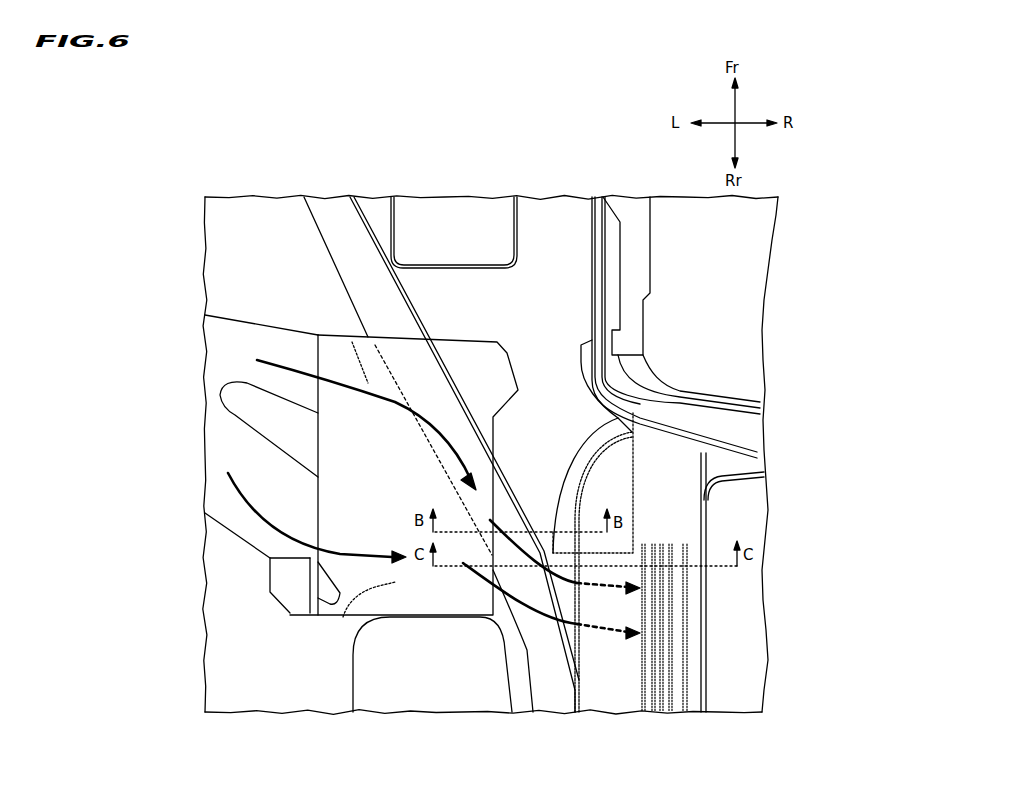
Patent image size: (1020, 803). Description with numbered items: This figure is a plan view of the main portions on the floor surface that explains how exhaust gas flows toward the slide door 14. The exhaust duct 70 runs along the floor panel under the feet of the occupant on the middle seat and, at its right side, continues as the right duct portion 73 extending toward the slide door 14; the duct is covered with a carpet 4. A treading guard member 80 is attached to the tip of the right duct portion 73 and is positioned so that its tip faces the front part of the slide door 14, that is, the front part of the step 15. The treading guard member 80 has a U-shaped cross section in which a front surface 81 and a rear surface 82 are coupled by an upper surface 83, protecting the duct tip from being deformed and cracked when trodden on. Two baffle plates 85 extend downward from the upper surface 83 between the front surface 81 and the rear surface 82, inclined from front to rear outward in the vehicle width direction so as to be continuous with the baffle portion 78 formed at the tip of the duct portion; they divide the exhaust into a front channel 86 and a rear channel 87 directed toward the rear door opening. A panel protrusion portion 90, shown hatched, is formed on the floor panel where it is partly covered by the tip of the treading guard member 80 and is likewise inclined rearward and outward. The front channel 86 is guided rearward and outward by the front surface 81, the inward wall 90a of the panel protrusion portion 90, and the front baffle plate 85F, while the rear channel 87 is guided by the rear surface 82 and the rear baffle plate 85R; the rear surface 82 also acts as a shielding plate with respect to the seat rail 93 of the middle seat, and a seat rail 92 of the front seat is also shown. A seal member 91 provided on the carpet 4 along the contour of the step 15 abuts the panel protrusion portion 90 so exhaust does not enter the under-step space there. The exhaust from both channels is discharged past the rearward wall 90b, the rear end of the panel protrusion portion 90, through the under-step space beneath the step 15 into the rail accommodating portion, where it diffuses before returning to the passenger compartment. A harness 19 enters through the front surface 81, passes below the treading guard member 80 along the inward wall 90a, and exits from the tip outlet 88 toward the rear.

The carpet 4 is at (593, 228).
The slide door 14 is at (740, 642).
The step 15 is at (613, 690).
The harness 19 is at (552, 690).
The exhaust duct 70 is at (243, 320).
The right duct portion 73 is at (227, 363).
The baffle portion 78 is at (247, 407).
The treading guard member 80 is at (320, 615).
The front surface 81 is at (395, 337).
The rear surface 82 is at (343, 617).
The upper surface 83 is at (505, 385).
The baffle plates 85 is at (352, 399).
The front baffle plate 85F is at (410, 443).
The rear baffle plate 85R is at (405, 543).
The front channel 86 is at (318, 335).
The rear channel 87 is at (290, 537).
The tip outlet 88 is at (495, 500).
The panel protrusion portion 90 is at (628, 368).
The inward wall 90a is at (460, 393).
The rearward wall 90b is at (587, 563).
The seal member 91 is at (670, 383).
The seat rail 92 is at (462, 233).
The seat rail 93 is at (436, 690).